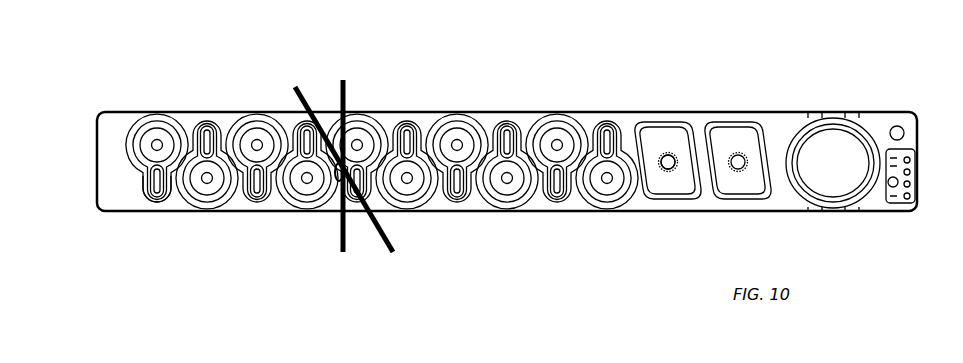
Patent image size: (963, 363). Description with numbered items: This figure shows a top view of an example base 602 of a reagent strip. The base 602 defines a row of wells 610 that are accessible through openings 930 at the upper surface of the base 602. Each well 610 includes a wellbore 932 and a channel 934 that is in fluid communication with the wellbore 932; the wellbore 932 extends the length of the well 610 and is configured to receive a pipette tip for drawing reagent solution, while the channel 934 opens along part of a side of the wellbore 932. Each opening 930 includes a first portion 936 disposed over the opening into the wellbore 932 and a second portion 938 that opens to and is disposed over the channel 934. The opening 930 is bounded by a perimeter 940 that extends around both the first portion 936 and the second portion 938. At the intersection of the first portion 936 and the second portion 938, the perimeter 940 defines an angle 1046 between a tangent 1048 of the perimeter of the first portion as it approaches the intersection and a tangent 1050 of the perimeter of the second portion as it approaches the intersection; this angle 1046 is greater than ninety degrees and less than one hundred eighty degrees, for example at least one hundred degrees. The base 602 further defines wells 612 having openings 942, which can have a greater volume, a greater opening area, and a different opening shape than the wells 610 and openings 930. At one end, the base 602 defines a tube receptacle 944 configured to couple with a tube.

The base 602 is at (444, 65).
The well 610 is at (210, 205).
The well 612 is at (673, 180).
The opening 930 is at (157, 200).
The wellbore 932 is at (152, 133).
The channel 934 is at (162, 200).
The first portion 936 is at (168, 133).
The second portion 938 is at (145, 190).
The perimeter 940 is at (133, 160).
The opening 942 is at (657, 133).
The tube receptacle 944 is at (817, 147).
The angle 1046 is at (338, 182).
The tangent 1048 is at (313, 125).
The tangent 1050 is at (345, 80).